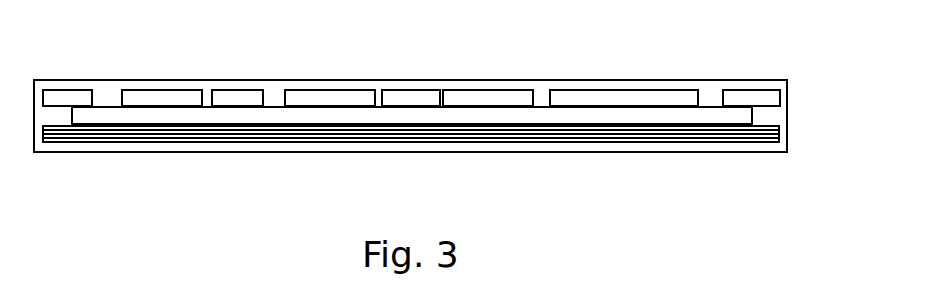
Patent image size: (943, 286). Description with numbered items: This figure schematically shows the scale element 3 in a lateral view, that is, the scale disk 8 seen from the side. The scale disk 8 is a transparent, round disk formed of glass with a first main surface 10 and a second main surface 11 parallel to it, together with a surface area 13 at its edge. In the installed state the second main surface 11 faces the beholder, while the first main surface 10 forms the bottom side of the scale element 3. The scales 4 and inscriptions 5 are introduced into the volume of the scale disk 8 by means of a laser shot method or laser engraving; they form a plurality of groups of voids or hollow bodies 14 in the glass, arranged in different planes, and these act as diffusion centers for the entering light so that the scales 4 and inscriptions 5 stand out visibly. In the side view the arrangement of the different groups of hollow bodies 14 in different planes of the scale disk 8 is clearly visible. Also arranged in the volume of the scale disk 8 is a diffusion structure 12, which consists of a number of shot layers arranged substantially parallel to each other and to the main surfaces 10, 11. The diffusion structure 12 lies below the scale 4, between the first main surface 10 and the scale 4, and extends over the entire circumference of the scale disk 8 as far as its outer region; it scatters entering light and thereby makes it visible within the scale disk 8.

The scale element 3 is at (542, 85).
The scale 4 is at (702, 117).
The inscription 5 is at (650, 97).
The scale disk 8 is at (443, 83).
The first main surface 10 is at (152, 155).
The second main surface 11 is at (142, 78).
The diffusion structure 12 is at (367, 135).
The surface area 13 is at (788, 118).
The hollow bodies 14 is at (288, 130).